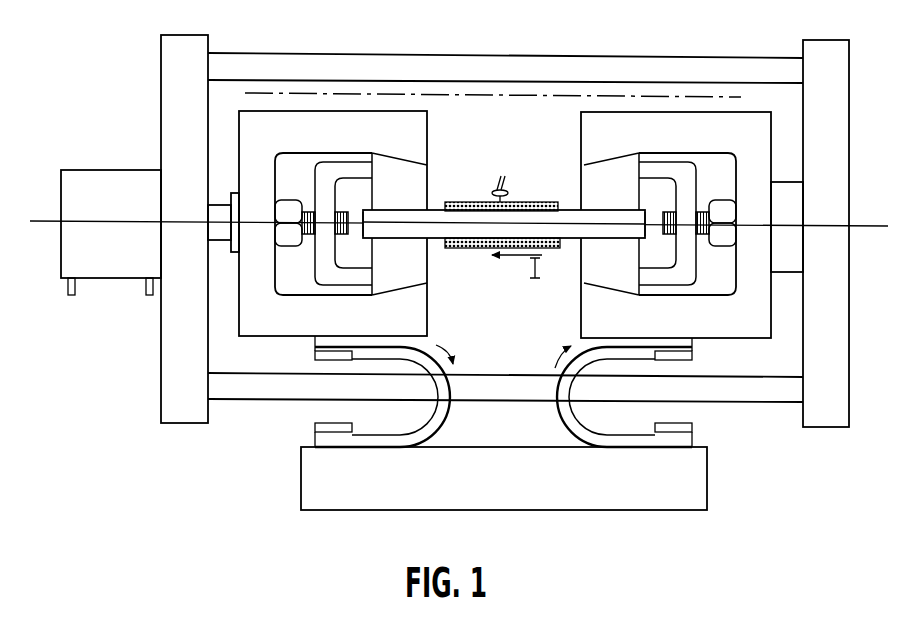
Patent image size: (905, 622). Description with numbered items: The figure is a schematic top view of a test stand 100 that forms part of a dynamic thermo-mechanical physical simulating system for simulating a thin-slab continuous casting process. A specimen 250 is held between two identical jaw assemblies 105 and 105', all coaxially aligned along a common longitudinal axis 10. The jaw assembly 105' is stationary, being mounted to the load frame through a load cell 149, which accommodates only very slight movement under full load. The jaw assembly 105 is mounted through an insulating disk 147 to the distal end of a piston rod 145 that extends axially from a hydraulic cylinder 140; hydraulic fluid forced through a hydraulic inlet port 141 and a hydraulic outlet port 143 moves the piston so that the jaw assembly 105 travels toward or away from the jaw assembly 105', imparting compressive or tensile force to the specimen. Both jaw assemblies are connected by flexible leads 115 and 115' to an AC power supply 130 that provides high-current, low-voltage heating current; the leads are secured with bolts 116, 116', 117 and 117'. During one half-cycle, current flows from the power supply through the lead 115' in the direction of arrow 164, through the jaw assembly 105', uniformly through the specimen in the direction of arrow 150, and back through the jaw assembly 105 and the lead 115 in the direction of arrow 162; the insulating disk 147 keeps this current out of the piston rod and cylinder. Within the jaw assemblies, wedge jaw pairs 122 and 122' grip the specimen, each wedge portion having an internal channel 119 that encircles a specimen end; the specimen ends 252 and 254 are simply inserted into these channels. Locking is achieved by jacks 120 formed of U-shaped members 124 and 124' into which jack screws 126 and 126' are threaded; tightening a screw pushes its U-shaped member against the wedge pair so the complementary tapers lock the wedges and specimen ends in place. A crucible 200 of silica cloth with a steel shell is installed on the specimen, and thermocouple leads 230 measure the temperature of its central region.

The common longitudinal axis 10 is at (40, 220).
The test stand 100 is at (750, 472).
The jaw assembly 105 is at (363, 224).
The jaw assembly 105' is at (645, 225).
The flexible lead 115 is at (405, 397).
The flexible lead 115' is at (601, 397).
The bolt 116 is at (301, 432).
The bolt 116' is at (704, 434).
The bolt 117 is at (299, 351).
The bolt 117' is at (709, 354).
The channel 119 is at (400, 218).
The jack 120 is at (288, 172).
The wedge jaw pair 122 is at (420, 202).
The wedge jaw pair 122' is at (578, 202).
The U-shaped member 124 is at (343, 246).
The U-shaped member 124' is at (667, 245).
The jack screw 126 is at (297, 260).
The jack screw 126' is at (713, 261).
The AC power supply 130 is at (346, 490).
The hydraulic cylinder 140 is at (113, 280).
The hydraulic inlet port 141 is at (70, 296).
The hydraulic outlet port 143 is at (147, 296).
The piston rod 145 is at (218, 202).
The insulating disk 147 is at (231, 252).
The load cell 149 is at (792, 185).
The arrow 150 is at (510, 256).
The arrow 162 is at (455, 356).
The arrow 164 is at (563, 348).
The crucible 200 is at (477, 257).
The thermocouple leads 230 is at (507, 192).
The specimen 250 is at (445, 208).
The specimen end 252 is at (398, 238).
The specimen end 254 is at (612, 218).